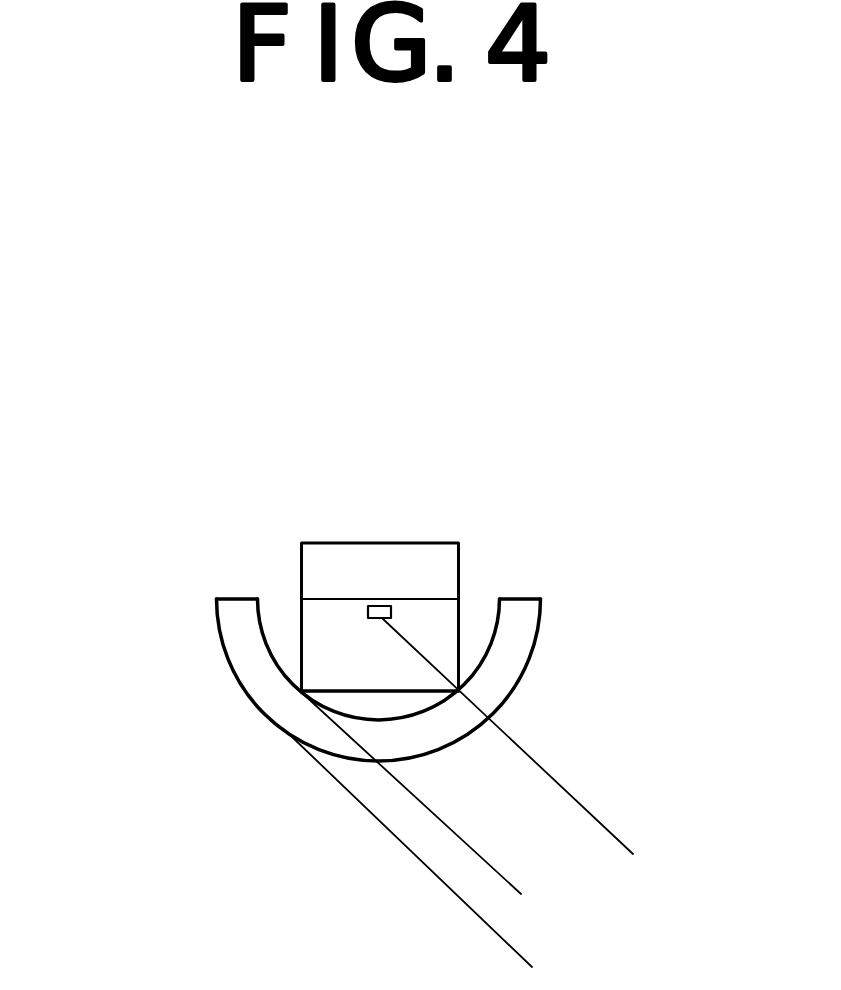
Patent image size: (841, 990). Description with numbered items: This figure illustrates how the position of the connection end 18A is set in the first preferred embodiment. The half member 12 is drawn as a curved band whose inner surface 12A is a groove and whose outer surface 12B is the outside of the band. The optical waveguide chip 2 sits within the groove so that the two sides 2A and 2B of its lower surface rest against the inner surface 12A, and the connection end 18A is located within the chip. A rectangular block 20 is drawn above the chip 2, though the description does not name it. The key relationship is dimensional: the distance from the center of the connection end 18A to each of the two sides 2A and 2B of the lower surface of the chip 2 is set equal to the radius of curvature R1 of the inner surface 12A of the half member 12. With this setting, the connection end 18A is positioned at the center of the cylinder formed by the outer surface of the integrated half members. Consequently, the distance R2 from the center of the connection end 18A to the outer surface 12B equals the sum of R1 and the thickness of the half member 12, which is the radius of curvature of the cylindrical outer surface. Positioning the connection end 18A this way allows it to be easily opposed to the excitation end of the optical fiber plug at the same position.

The optical waveguide chip 2 is at (314, 618).
The side of the lower surface of the optical waveguide chip 2A is at (301, 692).
The side of the lower surface of the optical waveguide chip 2B is at (459, 691).
The half member 12 is at (384, 607).
The inner surface of the half member 12A is at (497, 618).
The outer surface of the half member 12B is at (533, 647).
The connection end 18A is at (368, 608).
The body block 20 is at (388, 547).
The radius of curvature of the inner surface R1 is at (512, 883).
The distance from the center of the connection end to the outer surface R2 is at (527, 957).